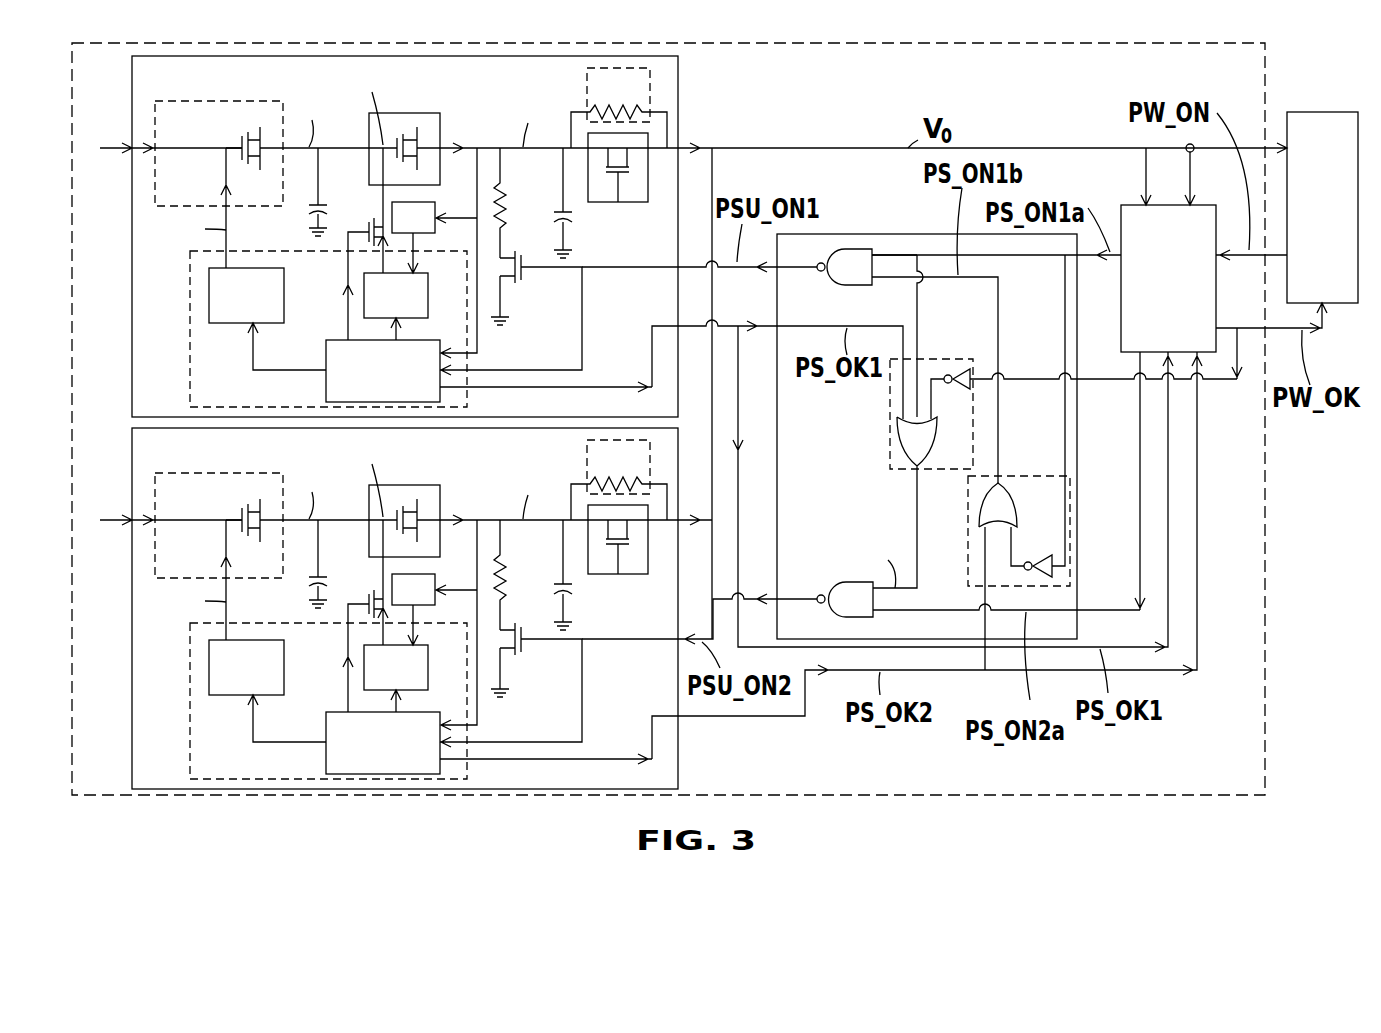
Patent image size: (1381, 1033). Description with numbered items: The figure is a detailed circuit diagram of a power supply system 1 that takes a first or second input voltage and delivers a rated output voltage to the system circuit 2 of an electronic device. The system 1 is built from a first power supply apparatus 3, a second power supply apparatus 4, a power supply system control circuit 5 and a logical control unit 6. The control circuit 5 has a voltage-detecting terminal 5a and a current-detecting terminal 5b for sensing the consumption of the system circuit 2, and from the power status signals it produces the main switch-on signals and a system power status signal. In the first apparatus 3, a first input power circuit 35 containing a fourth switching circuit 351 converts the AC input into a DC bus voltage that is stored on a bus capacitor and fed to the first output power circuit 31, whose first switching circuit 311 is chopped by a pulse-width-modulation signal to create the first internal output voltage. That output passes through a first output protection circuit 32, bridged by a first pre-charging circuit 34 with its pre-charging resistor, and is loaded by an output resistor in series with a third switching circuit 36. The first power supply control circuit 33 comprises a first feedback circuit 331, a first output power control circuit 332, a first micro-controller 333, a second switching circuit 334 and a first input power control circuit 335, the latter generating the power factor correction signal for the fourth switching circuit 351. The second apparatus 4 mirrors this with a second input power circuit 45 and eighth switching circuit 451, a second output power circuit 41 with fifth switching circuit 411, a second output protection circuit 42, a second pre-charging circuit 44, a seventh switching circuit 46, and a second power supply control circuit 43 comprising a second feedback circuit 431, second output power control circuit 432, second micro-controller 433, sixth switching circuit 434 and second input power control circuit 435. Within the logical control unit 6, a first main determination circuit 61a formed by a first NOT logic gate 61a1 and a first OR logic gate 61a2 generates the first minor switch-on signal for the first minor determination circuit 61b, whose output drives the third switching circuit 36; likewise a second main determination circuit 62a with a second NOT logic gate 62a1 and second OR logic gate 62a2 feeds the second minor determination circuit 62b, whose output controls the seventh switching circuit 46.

The power supply system 1 is at (1265, 565).
The system circuit 2 is at (1320, 112).
The first power supply apparatus 3 is at (394, 236).
The second power supply apparatus 4 is at (394, 608).
The power supply system control circuit 5 is at (1200, 203).
The voltage-detecting terminal 5a is at (1146, 203).
The current-detecting terminal 5b is at (1190, 203).
The logical control unit 6 is at (957, 429).
The first output power circuit 31 is at (430, 133).
The first switching circuit 311 is at (405, 137).
The first output protection circuit 32 is at (645, 204).
The first power supply control circuit 33 is at (396, 304).
The first feedback circuit 331 is at (413, 217).
The first output power control circuit 332 is at (396, 295).
The first micro-controller 333 is at (383, 371).
The second switching circuit 334 is at (372, 243).
The first input power control circuit 335 is at (246, 295).
The first pre-charging circuit 34 is at (587, 93).
The first input power circuit 35 is at (262, 135).
The fourth switching circuit 351 is at (238, 140).
The third switching circuit 36 is at (518, 277).
The second output power circuit 41 is at (430, 505).
The fifth switching circuit 411 is at (423, 497).
The second output protection circuit 42 is at (625, 563).
The second power supply control circuit 43 is at (396, 676).
The second feedback circuit 431 is at (413, 589).
The second output power control circuit 432 is at (396, 667).
The second micro-controller 433 is at (383, 743).
The sixth switching circuit 434 is at (338, 651).
The second input power control circuit 435 is at (246, 667).
The second pre-charging circuit 44 is at (592, 466).
The second input power circuit 45 is at (262, 507).
The eighth switching circuit 451 is at (271, 515).
The seventh switching circuit 46 is at (511, 685).
The first main determination circuit 61a is at (1031, 462).
The first NOT logic gate 61a1 is at (1050, 565).
The first OR logic gate 61a2 is at (1003, 510).
The first minor determination circuit 61b is at (857, 278).
The second main determination circuit 62a is at (901, 449).
The second NOT logic gate 62a1 is at (960, 368).
The second OR logic gate 62a2 is at (910, 433).
The second minor determination circuit 62b is at (850, 603).